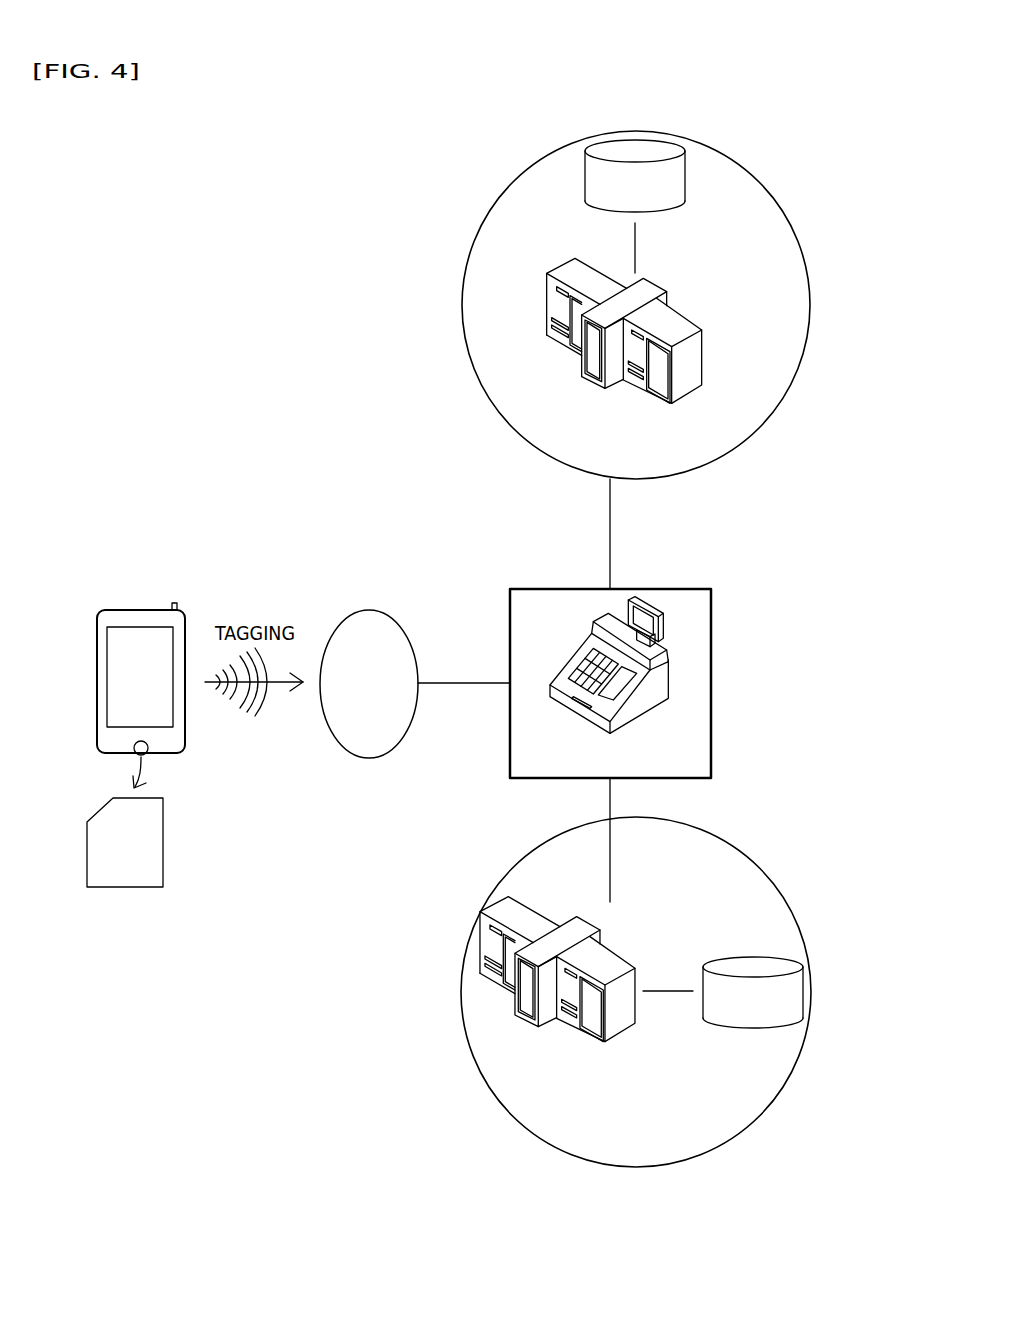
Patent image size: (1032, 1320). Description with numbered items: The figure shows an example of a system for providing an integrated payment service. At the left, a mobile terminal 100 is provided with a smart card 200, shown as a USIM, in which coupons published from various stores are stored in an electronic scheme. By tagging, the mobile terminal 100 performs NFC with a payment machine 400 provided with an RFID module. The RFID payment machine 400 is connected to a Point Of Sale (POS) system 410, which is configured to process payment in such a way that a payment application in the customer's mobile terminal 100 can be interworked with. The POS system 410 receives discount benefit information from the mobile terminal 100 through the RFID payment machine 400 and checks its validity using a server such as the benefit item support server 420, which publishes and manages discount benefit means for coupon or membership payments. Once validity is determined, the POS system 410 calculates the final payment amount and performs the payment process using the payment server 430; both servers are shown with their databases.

The mobile terminal 100 is at (97, 641).
The smart card 200 is at (163, 845).
The payment machine 400 is at (398, 616).
The Point Of Sale (POS) system 410 is at (711, 683).
The benefit item support server 420 is at (737, 158).
The payment server 430 is at (737, 848).